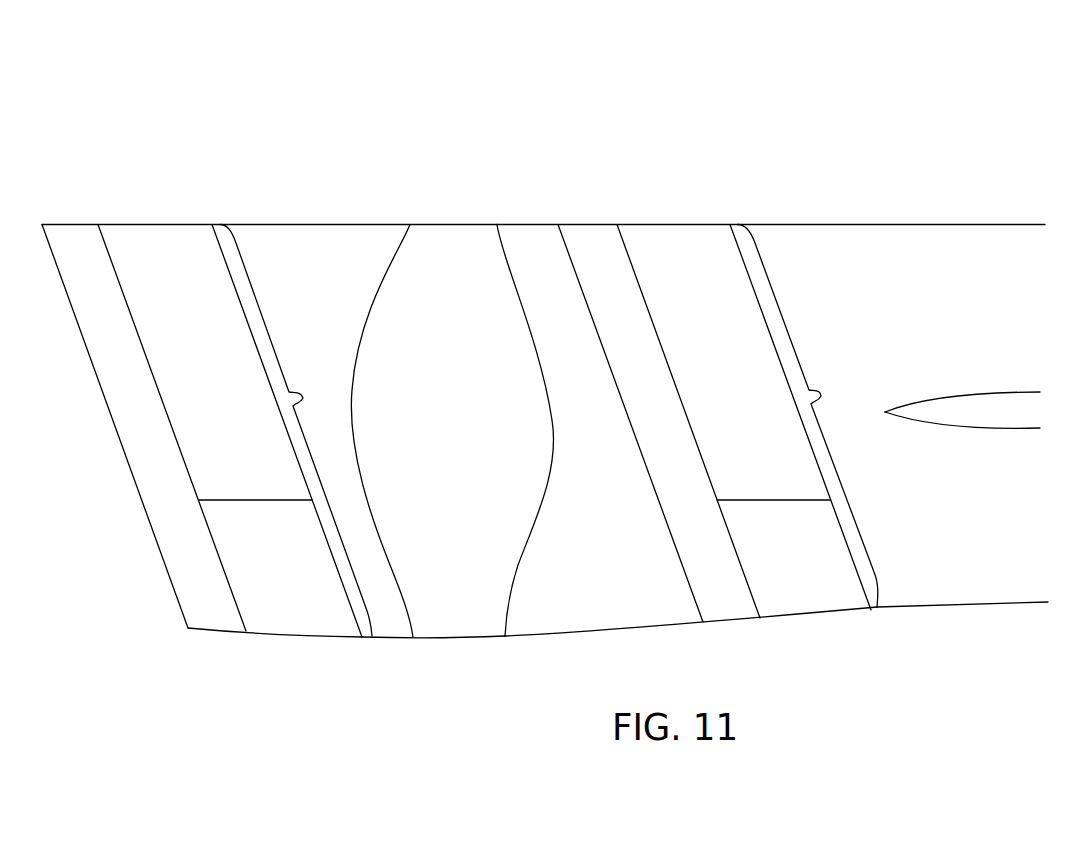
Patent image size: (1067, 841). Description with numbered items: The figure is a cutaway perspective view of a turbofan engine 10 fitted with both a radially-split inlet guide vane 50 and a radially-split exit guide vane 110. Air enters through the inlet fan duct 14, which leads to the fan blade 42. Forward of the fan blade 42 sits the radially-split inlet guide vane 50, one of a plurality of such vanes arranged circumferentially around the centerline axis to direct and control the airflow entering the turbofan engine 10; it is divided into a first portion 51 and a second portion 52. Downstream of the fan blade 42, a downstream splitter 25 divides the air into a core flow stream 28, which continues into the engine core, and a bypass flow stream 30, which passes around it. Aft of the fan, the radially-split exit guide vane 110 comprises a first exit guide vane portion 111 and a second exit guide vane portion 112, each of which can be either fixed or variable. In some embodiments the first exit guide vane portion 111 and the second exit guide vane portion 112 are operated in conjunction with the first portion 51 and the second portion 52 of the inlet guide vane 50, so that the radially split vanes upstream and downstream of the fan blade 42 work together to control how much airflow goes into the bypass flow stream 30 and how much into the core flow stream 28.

The turbofan engine 10 is at (841, 112).
The inlet fan duct 14 is at (213, 218).
The downstream splitter 25 is at (961, 397).
The core flow stream 28 is at (927, 552).
The bypass flow stream 30 is at (937, 285).
The fan blade 42 is at (452, 430).
The radially-split inlet guide vane 50 is at (296, 431).
The first portion 51 is at (277, 582).
The second portion 52 is at (218, 358).
The radially-split exit guide vane 110 is at (808, 416).
The first exit guide vane portion 111 is at (809, 577).
The second exit guide vane portion 112 is at (743, 332).